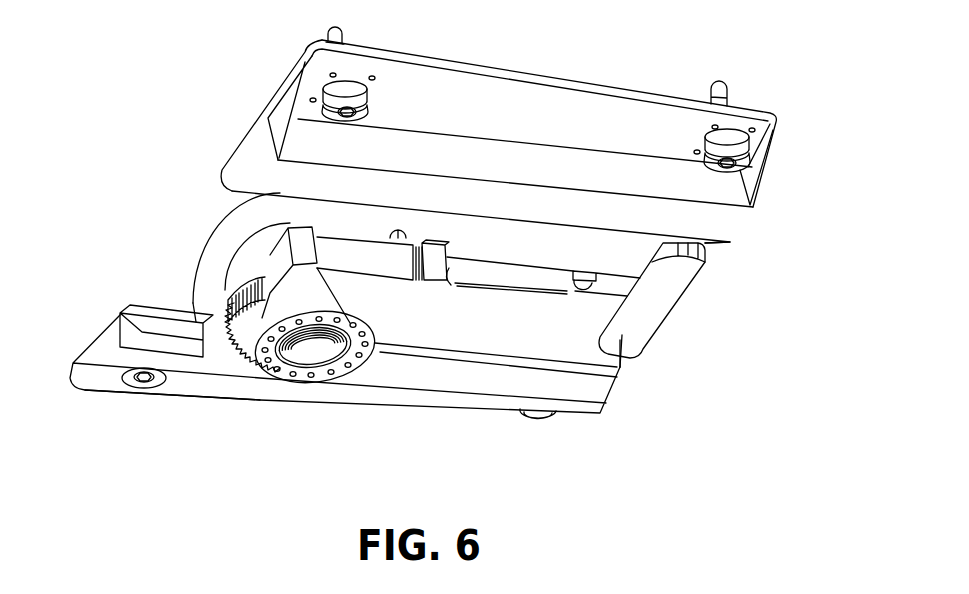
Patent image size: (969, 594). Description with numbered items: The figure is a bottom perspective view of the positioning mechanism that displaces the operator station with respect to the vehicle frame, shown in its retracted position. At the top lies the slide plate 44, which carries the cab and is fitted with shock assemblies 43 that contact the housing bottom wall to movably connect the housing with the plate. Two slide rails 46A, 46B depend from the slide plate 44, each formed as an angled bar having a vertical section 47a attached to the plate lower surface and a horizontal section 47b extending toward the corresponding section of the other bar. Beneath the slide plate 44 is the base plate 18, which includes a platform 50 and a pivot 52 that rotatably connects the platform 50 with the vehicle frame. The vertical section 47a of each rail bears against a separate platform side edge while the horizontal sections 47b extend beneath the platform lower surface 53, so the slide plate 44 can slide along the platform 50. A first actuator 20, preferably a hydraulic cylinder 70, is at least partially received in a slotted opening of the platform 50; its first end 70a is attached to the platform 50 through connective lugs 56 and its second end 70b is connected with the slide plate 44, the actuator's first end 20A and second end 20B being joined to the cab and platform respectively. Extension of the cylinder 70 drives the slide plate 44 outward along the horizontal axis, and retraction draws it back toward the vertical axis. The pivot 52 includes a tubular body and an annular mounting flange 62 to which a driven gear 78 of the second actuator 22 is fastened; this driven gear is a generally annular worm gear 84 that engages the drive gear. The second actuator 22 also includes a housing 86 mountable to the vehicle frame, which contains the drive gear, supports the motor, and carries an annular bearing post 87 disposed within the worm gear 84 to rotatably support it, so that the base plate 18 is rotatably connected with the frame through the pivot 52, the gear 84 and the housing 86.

The base plate 18 is at (209, 203).
The first actuator 20 is at (546, 252).
The first end of first actuator 20A is at (584, 270).
The second end of first actuator 20B is at (461, 253).
The second actuator 22 is at (180, 304).
The shock assembly 43 is at (366, 97).
The slide plate 44 is at (492, 56).
The slide rail 46A is at (482, 150).
The slide rail 46B is at (401, 392).
The vertical section 47a is at (603, 172).
The horizontal section 47b is at (722, 236).
The platform 50 is at (210, 223).
The pivot 52 is at (254, 248).
The lower surface 53 is at (557, 350).
The connective lugs 56 is at (663, 303).
The mounting flange 62 is at (240, 285).
The hydraulic cylinder 70 is at (507, 276).
The first end of hydraulic cylinder 70a is at (452, 277).
The second end of hydraulic cylinder 70b is at (590, 290).
The driven gear 78 is at (224, 352).
The worm gear 84 is at (236, 360).
The housing 86 is at (406, 318).
The bearing post 87 is at (295, 360).